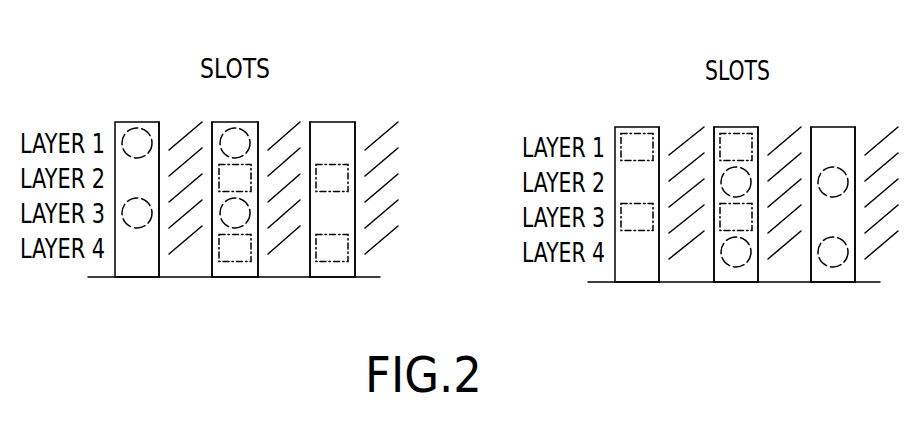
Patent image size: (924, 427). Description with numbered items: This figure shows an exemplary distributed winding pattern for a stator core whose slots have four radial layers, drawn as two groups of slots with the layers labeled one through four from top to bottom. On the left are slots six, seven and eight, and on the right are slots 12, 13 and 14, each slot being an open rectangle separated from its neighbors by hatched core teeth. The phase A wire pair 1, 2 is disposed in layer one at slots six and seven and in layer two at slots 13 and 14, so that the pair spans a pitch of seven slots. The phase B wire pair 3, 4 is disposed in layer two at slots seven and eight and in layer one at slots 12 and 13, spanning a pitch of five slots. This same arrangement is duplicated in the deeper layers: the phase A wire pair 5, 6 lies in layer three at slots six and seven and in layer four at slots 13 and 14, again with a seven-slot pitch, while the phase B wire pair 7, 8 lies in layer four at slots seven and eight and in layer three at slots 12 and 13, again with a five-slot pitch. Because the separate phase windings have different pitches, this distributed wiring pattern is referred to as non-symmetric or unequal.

The phase A wire 1 is at (126, 130).
The phase A wire 2 is at (244, 132).
The phase B wire 3 is at (255, 172).
The phase B wire 4 is at (342, 178).
The phase A wire 5 is at (132, 222).
The phase A wire 6 is at (864, 320).
The phase B wire 7 is at (638, 304).
The phase B wire 8 is at (728, 217).
The first slot 12 is at (637, 187).
The second slot 13 is at (736, 187).
The third slot 14 is at (833, 187).